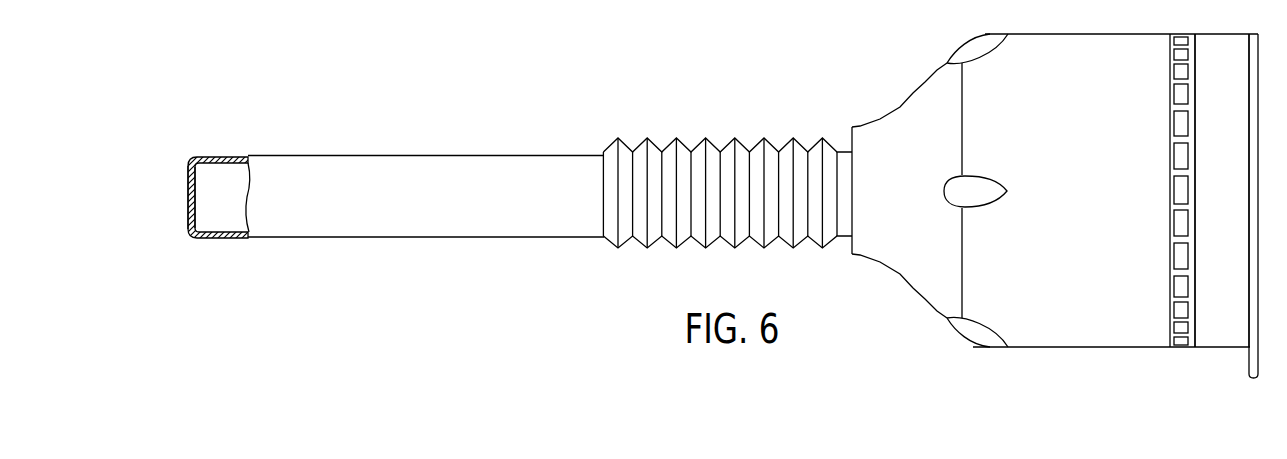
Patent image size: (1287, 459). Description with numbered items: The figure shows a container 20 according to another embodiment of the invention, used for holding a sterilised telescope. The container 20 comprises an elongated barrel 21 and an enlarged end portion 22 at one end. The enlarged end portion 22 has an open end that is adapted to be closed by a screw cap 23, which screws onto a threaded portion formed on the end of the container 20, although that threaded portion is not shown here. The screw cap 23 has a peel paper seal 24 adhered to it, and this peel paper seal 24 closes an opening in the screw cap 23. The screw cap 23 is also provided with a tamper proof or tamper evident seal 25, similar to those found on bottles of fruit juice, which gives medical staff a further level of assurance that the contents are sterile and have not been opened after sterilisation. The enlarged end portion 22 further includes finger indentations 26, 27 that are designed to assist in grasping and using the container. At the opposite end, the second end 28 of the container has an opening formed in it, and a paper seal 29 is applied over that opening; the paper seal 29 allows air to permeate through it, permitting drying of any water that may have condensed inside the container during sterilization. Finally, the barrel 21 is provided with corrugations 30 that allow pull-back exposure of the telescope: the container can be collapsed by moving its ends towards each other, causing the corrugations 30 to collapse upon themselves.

The container 20 is at (592, 262).
The elongated barrel 21 is at (393, 218).
The enlarged end portion 22 is at (1090, 192).
The screw cap 23 is at (1234, 194).
The peel paper seal 24 is at (1248, 362).
The tamper proof or tamper evident seal 25 is at (1182, 348).
The finger indentation 26 is at (970, 334).
The finger indentation 27 is at (960, 52).
The second end 28 is at (216, 240).
The paper seal 29 is at (188, 197).
The corrugations 30 is at (742, 218).